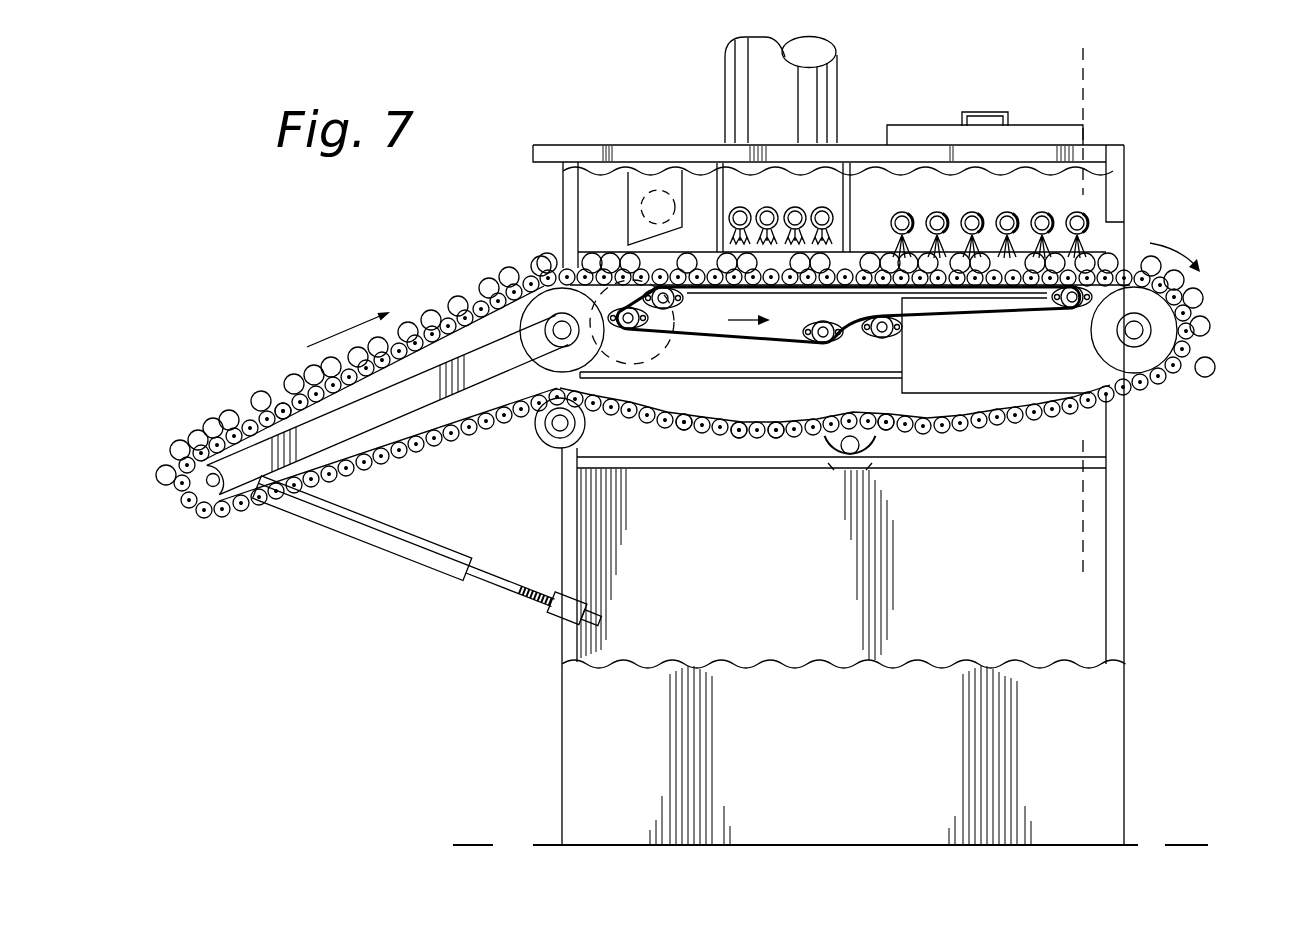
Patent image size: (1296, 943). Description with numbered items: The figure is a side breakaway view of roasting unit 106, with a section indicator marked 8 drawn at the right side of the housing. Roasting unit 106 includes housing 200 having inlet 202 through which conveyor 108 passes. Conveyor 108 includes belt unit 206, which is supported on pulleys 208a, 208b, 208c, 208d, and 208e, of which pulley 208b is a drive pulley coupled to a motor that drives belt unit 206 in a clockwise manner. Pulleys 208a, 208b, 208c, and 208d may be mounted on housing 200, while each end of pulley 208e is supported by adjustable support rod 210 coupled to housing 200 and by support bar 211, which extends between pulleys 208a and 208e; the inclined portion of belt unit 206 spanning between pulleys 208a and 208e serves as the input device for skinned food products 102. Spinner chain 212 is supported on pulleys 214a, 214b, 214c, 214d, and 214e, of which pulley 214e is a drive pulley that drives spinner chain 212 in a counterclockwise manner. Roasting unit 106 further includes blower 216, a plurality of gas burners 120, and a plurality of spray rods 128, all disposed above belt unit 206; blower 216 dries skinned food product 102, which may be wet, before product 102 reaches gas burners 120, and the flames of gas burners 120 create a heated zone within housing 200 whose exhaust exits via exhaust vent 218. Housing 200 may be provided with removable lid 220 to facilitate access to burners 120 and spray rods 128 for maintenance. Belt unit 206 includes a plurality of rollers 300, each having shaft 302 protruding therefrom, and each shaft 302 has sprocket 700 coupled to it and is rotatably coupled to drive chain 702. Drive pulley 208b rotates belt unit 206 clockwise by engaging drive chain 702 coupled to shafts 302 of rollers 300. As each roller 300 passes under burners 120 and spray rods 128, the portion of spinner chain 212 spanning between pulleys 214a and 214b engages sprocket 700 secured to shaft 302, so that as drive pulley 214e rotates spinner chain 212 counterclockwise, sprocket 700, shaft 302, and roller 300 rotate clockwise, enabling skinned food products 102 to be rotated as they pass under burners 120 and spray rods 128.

The skinned food product 102 is at (267, 393).
The roasting unit 106 is at (488, 168).
The conveyor 108 is at (294, 260).
The gas burners 120 is at (742, 212).
The spray rods 128 is at (965, 212).
The housing 200 is at (605, 143).
The inlet 202 is at (557, 262).
The belt unit 206 is at (445, 310).
The pulley 208a is at (540, 297).
The drive pulley 208b is at (1150, 350).
The pulley 208c is at (880, 447).
The pulley 208d is at (543, 457).
The pulley 208e is at (187, 498).
The adjustable support rod 210 is at (428, 552).
The support bar 211 is at (400, 397).
The spinner chain 212 is at (1000, 312).
The pulley 214a is at (672, 307).
The pulley 214b is at (1073, 307).
The pulley 214c is at (893, 338).
The pulley 214d is at (837, 313).
The drive pulley 214e is at (645, 367).
The blower 216 is at (623, 216).
The exhaust vent 218 is at (724, 105).
The removable lid 220 is at (975, 112).
The rollers 300 is at (283, 392).
The shaft 302 is at (725, 447).
The sprocket 700 is at (770, 447).
The drive chain 702 is at (875, 410).
The section line 8- 8 is at (1026, 580).